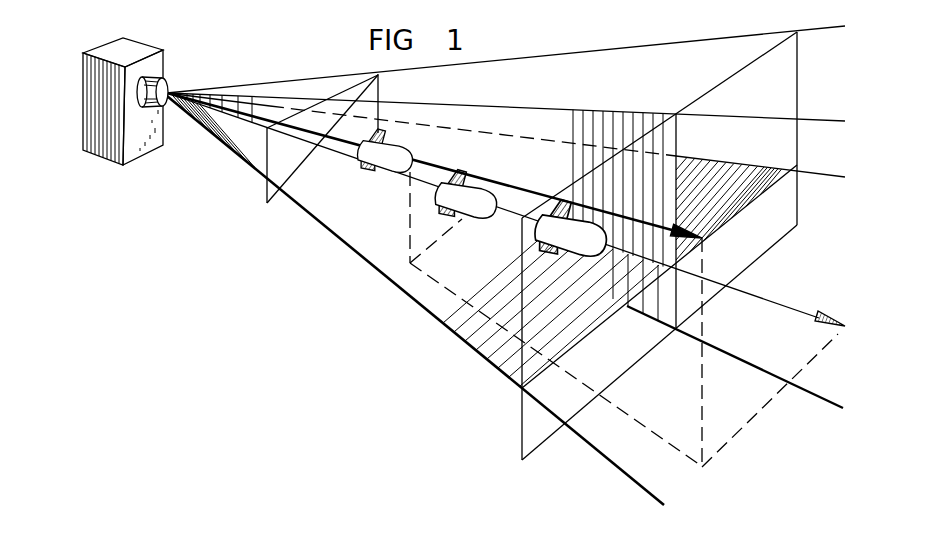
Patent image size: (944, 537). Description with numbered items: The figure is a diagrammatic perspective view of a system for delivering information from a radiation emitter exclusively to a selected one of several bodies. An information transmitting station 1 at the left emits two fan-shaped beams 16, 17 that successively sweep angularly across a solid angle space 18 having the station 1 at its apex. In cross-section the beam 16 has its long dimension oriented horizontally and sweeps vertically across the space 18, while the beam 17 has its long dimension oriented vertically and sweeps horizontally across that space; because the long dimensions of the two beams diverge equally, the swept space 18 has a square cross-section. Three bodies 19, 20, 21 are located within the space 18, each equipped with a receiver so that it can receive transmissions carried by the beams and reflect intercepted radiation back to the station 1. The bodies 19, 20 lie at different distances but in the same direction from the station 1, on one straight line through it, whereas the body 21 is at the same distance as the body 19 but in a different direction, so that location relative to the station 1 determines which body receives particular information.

The information transmitting station 1 is at (141, 51).
The fan-shaped beam 16 is at (368, 216).
The fan-shaped beam 17 is at (546, 187).
The solid angle space 18 is at (368, 86).
The body 19 is at (480, 207).
The body 20 is at (550, 233).
The body 21 is at (398, 155).